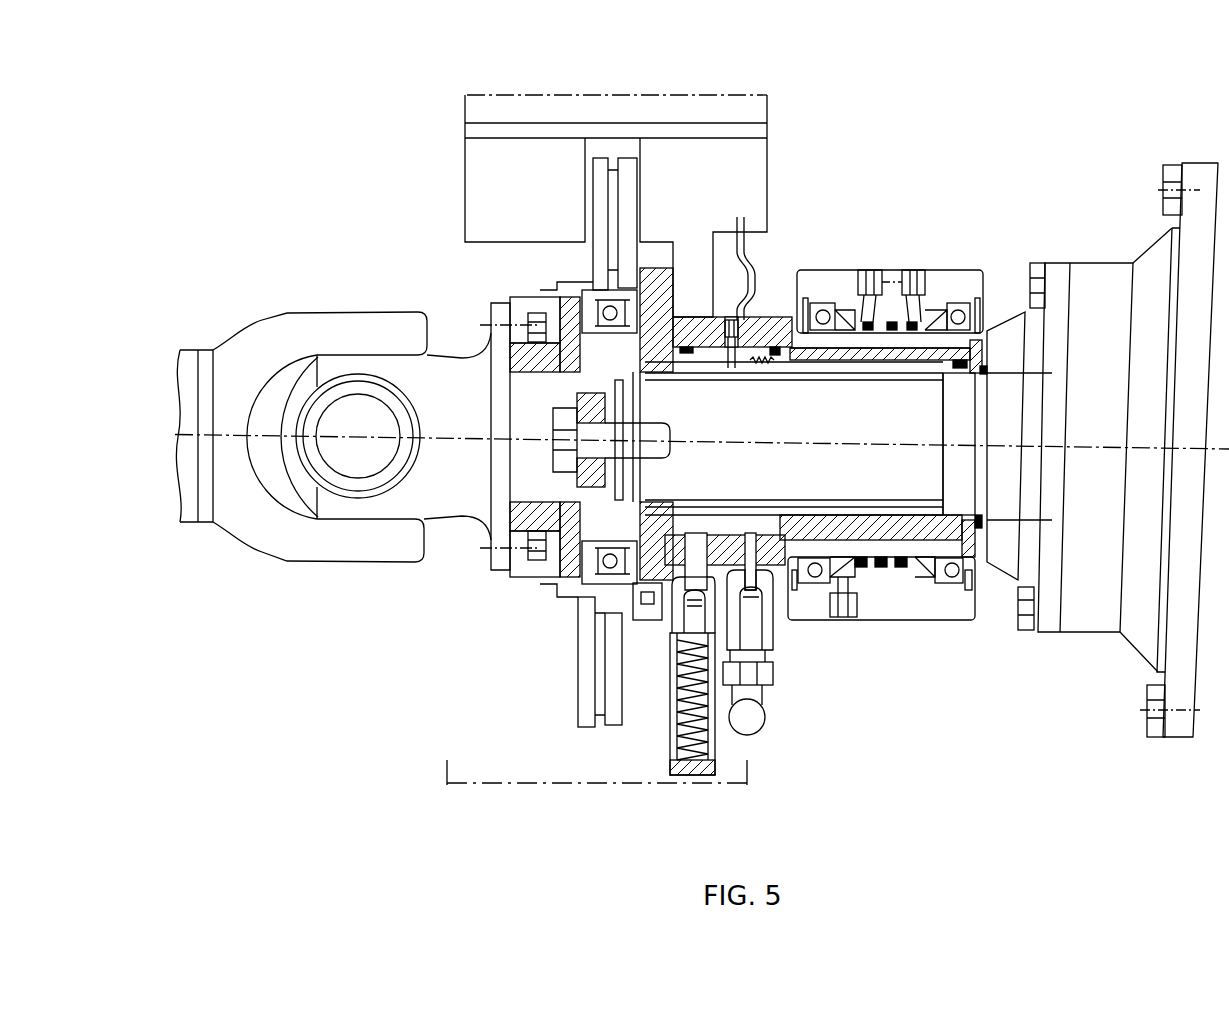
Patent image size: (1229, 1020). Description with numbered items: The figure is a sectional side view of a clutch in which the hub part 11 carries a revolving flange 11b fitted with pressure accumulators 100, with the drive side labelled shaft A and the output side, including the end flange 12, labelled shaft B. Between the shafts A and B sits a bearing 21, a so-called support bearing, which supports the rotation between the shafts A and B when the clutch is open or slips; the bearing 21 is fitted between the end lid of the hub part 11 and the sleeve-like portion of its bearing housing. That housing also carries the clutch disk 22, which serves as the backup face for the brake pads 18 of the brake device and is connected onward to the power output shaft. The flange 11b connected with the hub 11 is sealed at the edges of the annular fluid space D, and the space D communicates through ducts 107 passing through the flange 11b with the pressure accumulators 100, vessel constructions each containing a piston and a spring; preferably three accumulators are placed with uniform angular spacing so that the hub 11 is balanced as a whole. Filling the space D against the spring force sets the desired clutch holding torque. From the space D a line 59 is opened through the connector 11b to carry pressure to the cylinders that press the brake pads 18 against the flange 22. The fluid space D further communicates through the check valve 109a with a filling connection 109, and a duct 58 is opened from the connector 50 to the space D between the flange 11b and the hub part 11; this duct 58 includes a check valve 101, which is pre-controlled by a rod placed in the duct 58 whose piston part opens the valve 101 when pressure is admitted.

The shaft A is at (396, 268).
The shaft B is at (1034, 243).
The annular fluid space D is at (758, 333).
The hub part 11 is at (673, 307).
The flange 11b is at (797, 272).
The flange 12 is at (1104, 426).
The brake pads 18 is at (585, 182).
The bearing 21 is at (570, 293).
The clutch disk 22 is at (609, 163).
The connector 50 is at (952, 270).
The duct 58 is at (843, 367).
The line 59 is at (747, 262).
The pressure accumulators 100 is at (667, 762).
The check valve 101 is at (762, 380).
The ducts 107 is at (668, 623).
The filling connection 109 is at (780, 718).
The check valve 109a is at (775, 650).